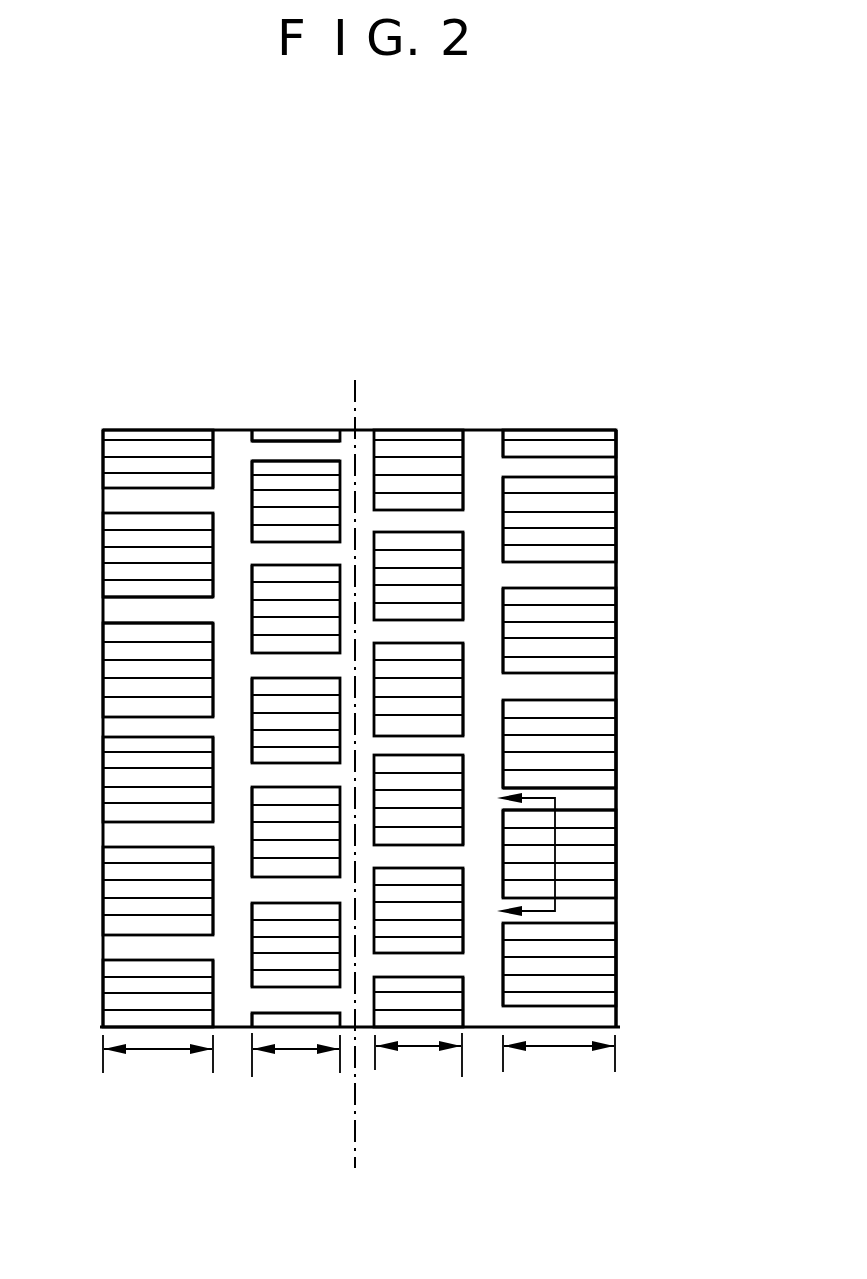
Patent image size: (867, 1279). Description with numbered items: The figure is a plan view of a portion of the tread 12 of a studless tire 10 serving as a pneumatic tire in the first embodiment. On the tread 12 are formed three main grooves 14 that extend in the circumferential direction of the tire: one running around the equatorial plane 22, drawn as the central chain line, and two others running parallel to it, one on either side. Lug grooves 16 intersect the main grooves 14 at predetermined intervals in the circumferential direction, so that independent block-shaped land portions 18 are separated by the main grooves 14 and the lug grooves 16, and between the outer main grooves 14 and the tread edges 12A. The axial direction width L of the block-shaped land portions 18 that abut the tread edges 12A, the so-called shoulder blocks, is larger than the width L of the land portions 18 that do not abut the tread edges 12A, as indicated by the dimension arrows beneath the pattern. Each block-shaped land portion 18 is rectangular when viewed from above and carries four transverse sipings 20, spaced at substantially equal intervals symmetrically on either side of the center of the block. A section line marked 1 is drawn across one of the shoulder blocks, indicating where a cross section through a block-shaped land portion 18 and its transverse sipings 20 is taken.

The studless tire 10 is at (666, 437).
The tread 12 is at (634, 512).
The tread edge 12A is at (102, 727).
The main groove 14 is at (227, 447).
The lug groove 16 is at (263, 448).
The block-shaped land portion 18 is at (287, 468).
The transverse siping 20 is at (312, 490).
The equatorial plane 22 is at (357, 395).
The axial direction width L is at (158, 1050).
The section line 1- 1 is at (513, 854).